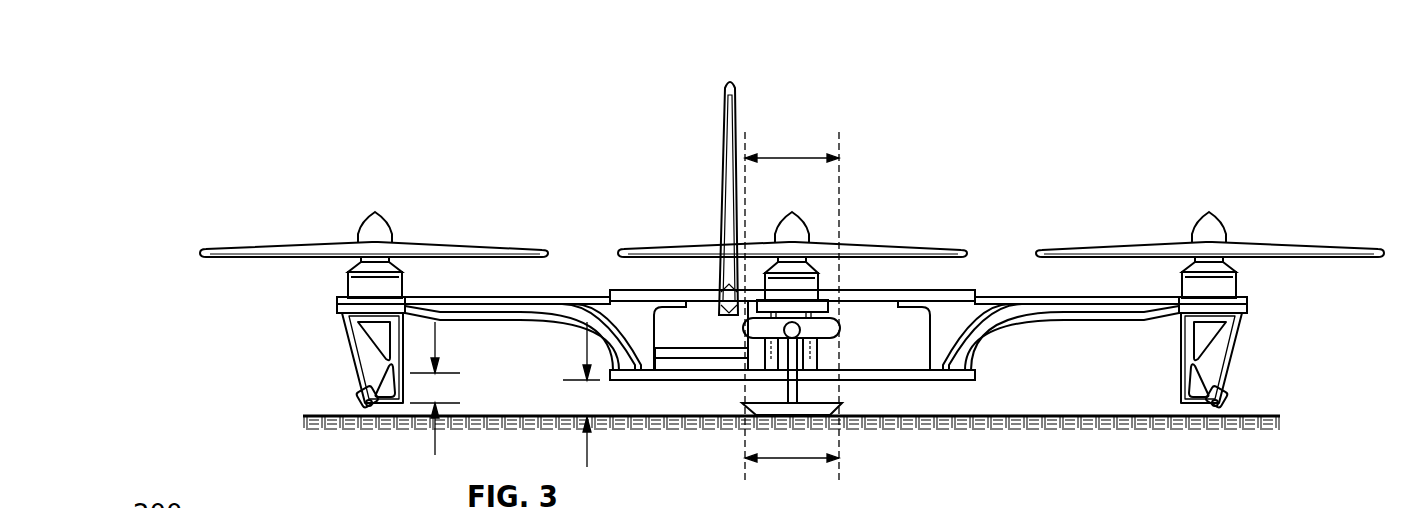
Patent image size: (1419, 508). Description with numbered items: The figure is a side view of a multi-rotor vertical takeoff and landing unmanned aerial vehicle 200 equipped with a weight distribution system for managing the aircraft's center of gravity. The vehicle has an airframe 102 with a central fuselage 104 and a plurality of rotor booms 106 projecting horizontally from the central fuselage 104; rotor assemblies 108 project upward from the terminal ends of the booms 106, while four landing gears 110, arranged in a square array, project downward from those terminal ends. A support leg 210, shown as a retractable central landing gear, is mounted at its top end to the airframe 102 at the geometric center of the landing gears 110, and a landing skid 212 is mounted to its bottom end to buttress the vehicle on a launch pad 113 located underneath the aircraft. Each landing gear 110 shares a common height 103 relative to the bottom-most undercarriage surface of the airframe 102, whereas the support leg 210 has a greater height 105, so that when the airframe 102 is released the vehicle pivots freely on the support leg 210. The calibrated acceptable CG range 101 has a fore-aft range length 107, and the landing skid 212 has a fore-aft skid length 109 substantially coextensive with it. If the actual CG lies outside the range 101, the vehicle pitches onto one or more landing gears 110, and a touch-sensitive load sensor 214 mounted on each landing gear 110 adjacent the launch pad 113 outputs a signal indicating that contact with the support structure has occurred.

The multi-rotor VTOL unmanned aerial vehicle 200 is at (262, 88).
The calibrated CG range 101 is at (838, 330).
The airframe 102 is at (582, 178).
The landing gear height 103 is at (437, 343).
The central fuselage 104 is at (621, 290).
The support leg height 105 is at (585, 350).
The rotor boom 106 is at (563, 303).
The fore-aft range length 107 is at (791, 155).
The rotor assembly 108 is at (373, 180).
The fore-aft skid length 109 is at (804, 460).
The landing gear 110 is at (362, 358).
The launch pad 113 is at (1059, 413).
The support leg 210 is at (730, 393).
The landing skid 212 is at (842, 410).
The touch-sensitive load sensor 214 is at (358, 398).